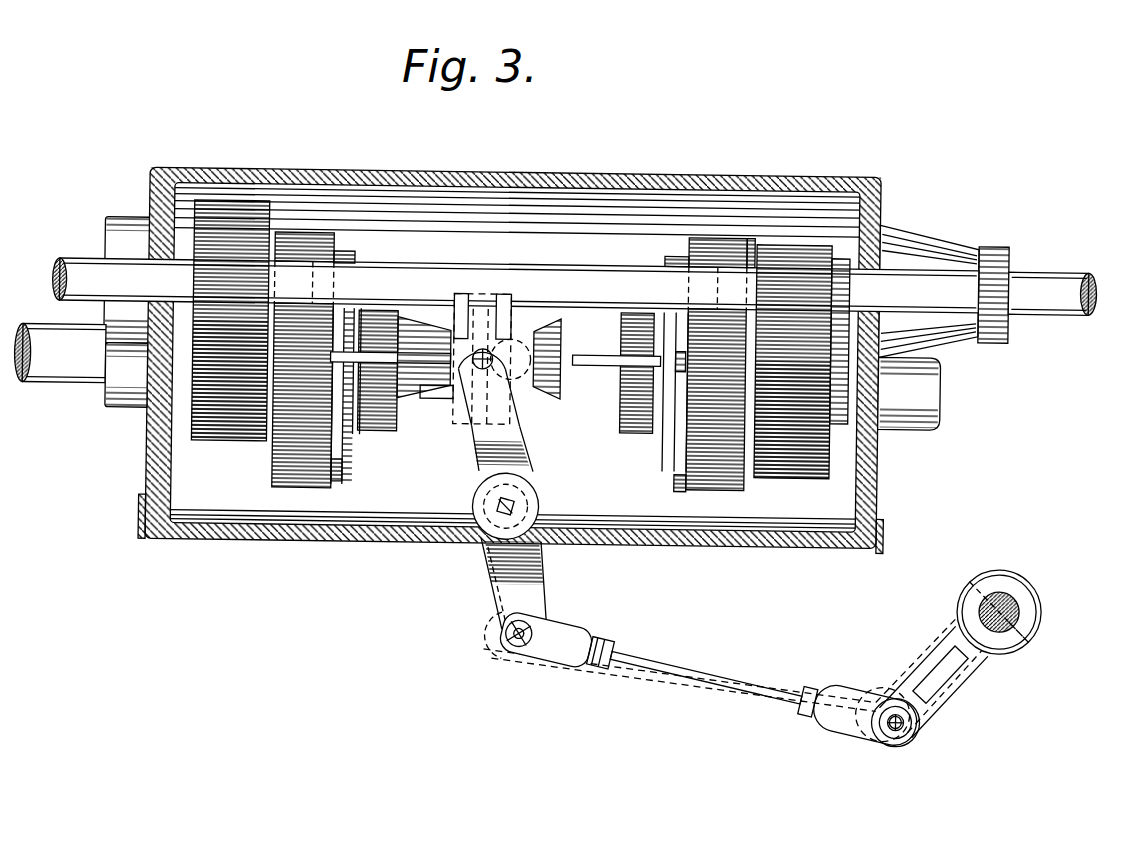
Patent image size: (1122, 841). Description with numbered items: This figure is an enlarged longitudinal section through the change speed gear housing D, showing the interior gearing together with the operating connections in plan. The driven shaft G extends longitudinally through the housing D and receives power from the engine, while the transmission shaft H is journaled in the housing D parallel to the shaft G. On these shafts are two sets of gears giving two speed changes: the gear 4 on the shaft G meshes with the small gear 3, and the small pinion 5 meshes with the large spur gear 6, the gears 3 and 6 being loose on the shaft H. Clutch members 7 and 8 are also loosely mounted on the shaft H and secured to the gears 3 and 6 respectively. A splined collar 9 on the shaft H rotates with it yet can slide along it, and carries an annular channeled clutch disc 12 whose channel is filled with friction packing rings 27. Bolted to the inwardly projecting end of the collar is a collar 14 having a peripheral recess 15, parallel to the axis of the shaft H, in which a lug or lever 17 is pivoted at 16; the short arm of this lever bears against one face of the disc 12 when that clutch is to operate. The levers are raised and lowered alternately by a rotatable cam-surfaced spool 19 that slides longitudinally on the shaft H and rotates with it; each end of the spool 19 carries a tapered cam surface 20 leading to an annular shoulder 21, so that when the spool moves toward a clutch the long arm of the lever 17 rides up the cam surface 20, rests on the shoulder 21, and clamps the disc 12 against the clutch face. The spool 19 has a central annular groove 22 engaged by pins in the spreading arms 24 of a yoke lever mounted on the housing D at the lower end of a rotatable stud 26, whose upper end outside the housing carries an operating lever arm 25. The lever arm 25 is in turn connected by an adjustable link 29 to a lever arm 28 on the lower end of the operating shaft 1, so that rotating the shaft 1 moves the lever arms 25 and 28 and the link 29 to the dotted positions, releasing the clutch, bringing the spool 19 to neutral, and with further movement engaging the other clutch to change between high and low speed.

The operating shaft 1 is at (996, 590).
The small gear 3 is at (222, 433).
The gear 4 is at (222, 230).
The small pinion 5 is at (785, 247).
The large spur gear 6 is at (797, 460).
The clutch member 7 is at (283, 460).
The clutch member 8 is at (719, 480).
The collar 9 is at (336, 476).
The annular channeled clutch disc 12 is at (355, 258).
The collar 14 is at (378, 425).
The recess 15 is at (382, 356).
The pivot 16 is at (628, 357).
The lug 17 is at (577, 358).
The cam-surfaced spool 19 is at (460, 332).
The tapered cam surface 20 is at (420, 322).
The annular shoulder 21 is at (436, 414).
The central annular groove 22 is at (500, 300).
The spreading arms of yoke lever 24 is at (475, 437).
The operating lever arm 25 is at (525, 568).
The rotatable bolt or stud 26 is at (492, 540).
The friction packing or wear plate rings 27 is at (350, 470).
The lever arm 28 is at (950, 700).
The adjustable link 29 is at (712, 670).
The driven shaft G is at (1030, 283).
The transmission shaft H is at (50, 390).
The change speed gear housing D is at (705, 543).